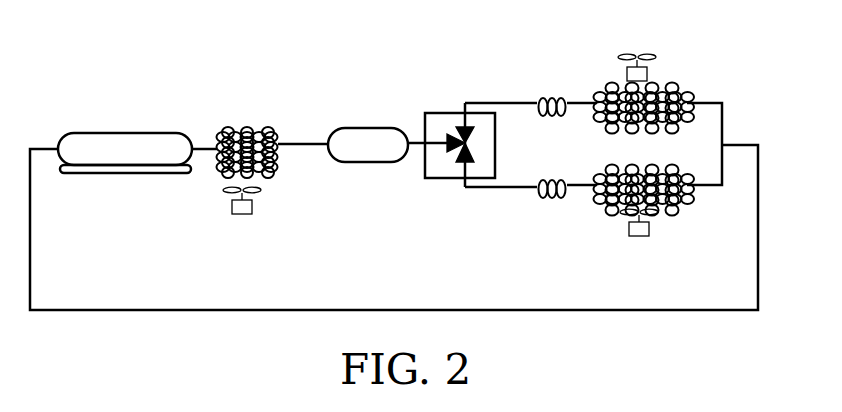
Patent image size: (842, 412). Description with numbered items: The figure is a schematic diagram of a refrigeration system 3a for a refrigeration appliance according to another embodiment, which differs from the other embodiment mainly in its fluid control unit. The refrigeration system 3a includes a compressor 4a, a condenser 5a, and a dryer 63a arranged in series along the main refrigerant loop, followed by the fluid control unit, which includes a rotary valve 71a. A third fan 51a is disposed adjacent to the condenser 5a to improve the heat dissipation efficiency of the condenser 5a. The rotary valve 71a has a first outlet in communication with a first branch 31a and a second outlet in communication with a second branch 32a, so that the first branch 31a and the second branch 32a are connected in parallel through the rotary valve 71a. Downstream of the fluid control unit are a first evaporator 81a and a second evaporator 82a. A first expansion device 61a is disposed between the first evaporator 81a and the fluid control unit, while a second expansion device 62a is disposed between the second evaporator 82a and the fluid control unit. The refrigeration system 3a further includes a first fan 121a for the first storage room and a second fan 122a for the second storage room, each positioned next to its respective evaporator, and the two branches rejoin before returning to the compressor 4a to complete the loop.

The refrigeration system 3a is at (107, 83).
The compressor 4a is at (123, 133).
The condenser 5a is at (242, 128).
The third fan 51a is at (253, 207).
The dryer 63a is at (372, 137).
The rotary valve 71a is at (450, 113).
The first branch 31a is at (523, 103).
The second branch 32a is at (510, 187).
The first expansion device 61a is at (550, 95).
The second expansion device 62a is at (550, 200).
The first evaporator 81a is at (683, 88).
The second evaporator 82a is at (683, 193).
The first fan 121a is at (645, 62).
The second fan 122a is at (650, 228).